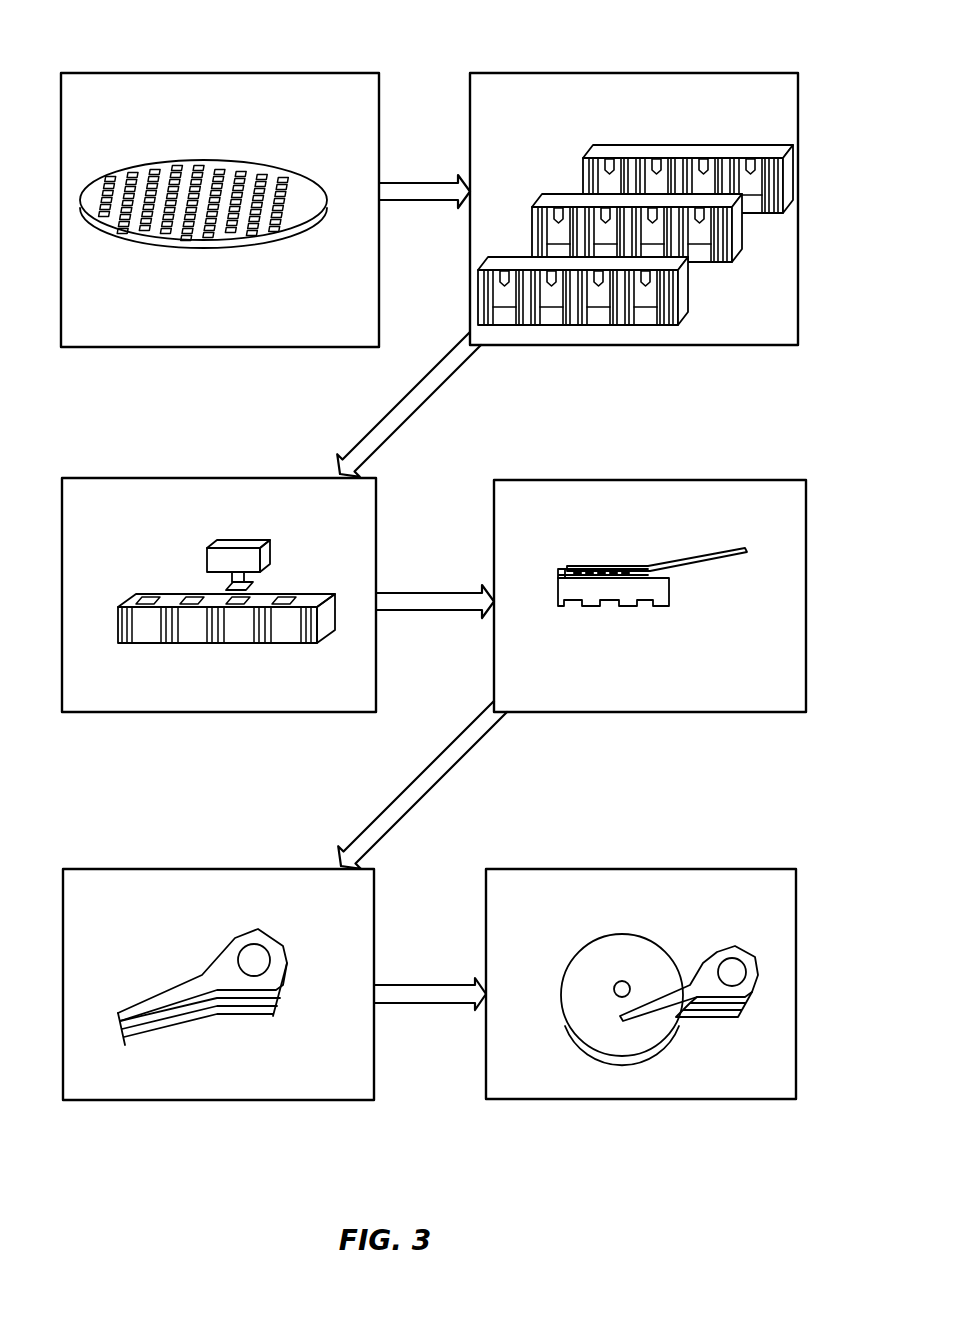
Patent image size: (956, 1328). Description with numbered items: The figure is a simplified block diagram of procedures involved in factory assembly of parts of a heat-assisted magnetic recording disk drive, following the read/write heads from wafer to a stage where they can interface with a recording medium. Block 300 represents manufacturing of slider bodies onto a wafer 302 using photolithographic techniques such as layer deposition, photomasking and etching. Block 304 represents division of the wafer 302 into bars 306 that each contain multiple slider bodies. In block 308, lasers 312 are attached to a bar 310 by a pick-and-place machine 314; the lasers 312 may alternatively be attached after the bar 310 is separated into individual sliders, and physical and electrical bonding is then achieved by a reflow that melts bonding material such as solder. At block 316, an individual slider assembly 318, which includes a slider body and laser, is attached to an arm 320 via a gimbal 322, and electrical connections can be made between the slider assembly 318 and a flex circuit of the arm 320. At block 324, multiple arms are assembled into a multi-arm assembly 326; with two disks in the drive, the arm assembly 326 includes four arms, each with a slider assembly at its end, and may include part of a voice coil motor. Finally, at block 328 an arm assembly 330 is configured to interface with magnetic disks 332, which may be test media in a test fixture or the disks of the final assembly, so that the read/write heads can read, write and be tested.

The slider body manufacturing block 300 is at (93, 73).
The wafer 302 is at (222, 160).
The wafer division block 304 is at (587, 73).
The bars 306 is at (577, 190).
The laser attachment block 308 is at (98, 478).
The bar 310 is at (196, 643).
The lasers 312 is at (226, 586).
The pick-and-place machine 314 is at (243, 548).
The slider-to-arm attachment block 316 is at (546, 480).
The slider assembly 318 is at (637, 606).
The arm 320 is at (691, 564).
The gimbal 322 is at (596, 569).
The multi-arm assembly block 324 is at (175, 869).
The multi-arm assembly 326 is at (180, 985).
The disk interface block 328 is at (628, 869).
The arm assembly 330 is at (712, 955).
The magnetic disks 332 is at (583, 965).